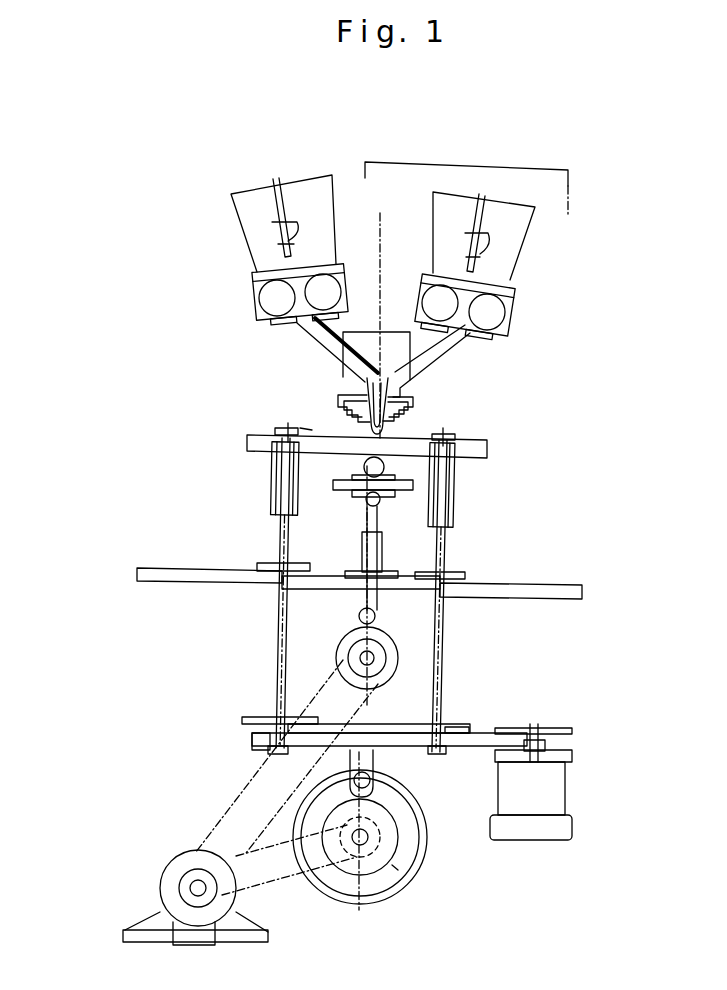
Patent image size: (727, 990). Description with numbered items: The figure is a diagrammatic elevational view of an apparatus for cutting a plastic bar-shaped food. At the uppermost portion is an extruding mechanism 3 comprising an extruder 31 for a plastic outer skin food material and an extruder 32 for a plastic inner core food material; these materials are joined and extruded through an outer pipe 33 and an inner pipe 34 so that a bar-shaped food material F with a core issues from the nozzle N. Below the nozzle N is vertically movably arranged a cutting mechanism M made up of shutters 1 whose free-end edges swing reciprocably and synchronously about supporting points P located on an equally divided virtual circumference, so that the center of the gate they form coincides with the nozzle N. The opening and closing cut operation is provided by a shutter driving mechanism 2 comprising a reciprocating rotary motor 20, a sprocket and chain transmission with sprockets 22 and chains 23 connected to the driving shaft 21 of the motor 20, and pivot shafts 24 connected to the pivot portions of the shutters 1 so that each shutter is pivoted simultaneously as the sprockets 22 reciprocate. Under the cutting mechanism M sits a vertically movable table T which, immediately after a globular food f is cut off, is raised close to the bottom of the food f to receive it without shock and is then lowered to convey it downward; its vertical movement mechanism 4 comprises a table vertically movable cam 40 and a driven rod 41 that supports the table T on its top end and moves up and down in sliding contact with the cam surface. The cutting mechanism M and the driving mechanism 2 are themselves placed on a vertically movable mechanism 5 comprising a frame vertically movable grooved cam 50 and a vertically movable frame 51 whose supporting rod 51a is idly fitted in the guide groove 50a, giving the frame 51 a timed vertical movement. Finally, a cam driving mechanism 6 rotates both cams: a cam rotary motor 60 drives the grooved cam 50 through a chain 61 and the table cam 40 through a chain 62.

The shutter 1 is at (247, 446).
The shutter driving mechanism 2 is at (518, 720).
The extruding mechanism 3 is at (468, 175).
The vertical movement mechanism 4 is at (332, 601).
The vertically movable mechanism 5 is at (470, 837).
The cam driving mechanism 6 is at (58, 830).
The reciprocating rotary motor 20 is at (560, 783).
The driving shaft 21 is at (527, 731).
The sprocket 22 is at (242, 716).
The chain 23 is at (373, 724).
The pivot shaft 24 is at (274, 662).
The extruder 31 is at (522, 224).
The extruder 32 is at (327, 200).
The outer pipe 33 is at (448, 352).
The inner pipe 34 is at (316, 349).
The table vertically movable cam 40 is at (343, 657).
The driven rod 41 is at (364, 611).
The frame vertically movable grooved cam 50 is at (428, 860).
The guide groove 50a is at (393, 867).
The vertically movable frame 51 is at (462, 752).
The supporting rod 51a is at (377, 763).
The cam rotary motor 60 is at (163, 868).
The chain 61 is at (265, 846).
The chain 62 is at (250, 782).
The cutting mechanism M is at (312, 428).
The bar-shaped food material F is at (352, 421).
The nozzle N is at (415, 410).
The supporting point P is at (272, 435).
The vertically movable table T is at (410, 492).
The globular food f is at (363, 465).